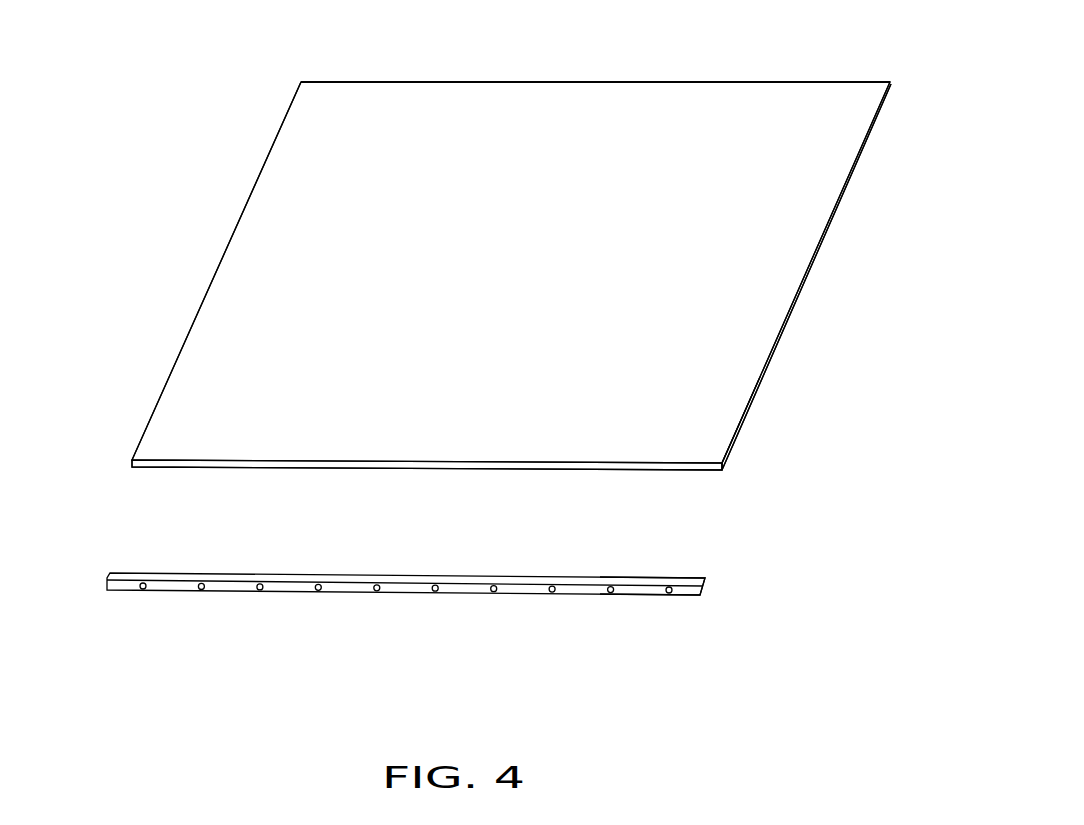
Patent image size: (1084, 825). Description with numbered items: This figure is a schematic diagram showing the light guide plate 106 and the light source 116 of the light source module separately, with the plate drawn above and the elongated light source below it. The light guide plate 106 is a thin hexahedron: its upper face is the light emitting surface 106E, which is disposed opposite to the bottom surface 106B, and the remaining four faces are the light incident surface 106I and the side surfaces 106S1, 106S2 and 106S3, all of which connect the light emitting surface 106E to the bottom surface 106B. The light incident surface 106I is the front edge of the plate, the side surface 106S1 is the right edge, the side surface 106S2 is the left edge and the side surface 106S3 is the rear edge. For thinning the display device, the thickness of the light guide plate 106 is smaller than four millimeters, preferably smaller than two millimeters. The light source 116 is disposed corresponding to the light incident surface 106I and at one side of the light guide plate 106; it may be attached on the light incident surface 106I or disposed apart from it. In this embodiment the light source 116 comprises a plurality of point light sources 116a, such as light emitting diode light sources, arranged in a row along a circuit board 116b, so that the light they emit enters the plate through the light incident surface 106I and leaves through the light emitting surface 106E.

The light guide plate 106 is at (638, 118).
The light emitting surface 106E is at (512, 107).
The side surface 106S3 is at (765, 82).
The side surface 106S2 is at (197, 280).
The side surface 106S1 is at (812, 260).
The light incident surface 106I is at (585, 465).
The bottom surface 106B is at (738, 432).
The light source 116 is at (439, 654).
The point light sources 116a is at (669, 595).
The circuit board 116b is at (708, 585).